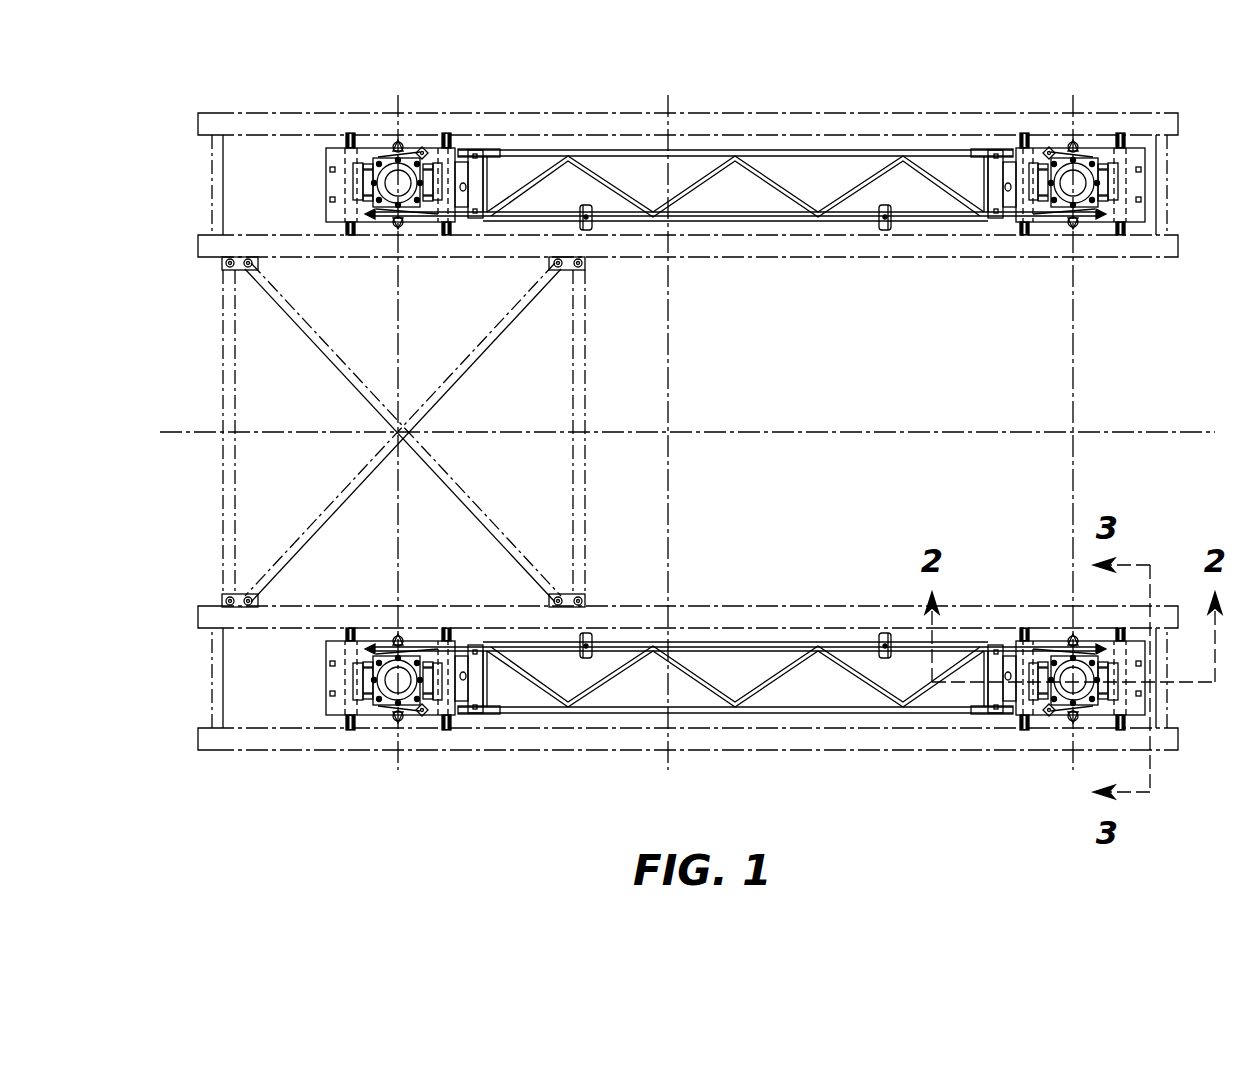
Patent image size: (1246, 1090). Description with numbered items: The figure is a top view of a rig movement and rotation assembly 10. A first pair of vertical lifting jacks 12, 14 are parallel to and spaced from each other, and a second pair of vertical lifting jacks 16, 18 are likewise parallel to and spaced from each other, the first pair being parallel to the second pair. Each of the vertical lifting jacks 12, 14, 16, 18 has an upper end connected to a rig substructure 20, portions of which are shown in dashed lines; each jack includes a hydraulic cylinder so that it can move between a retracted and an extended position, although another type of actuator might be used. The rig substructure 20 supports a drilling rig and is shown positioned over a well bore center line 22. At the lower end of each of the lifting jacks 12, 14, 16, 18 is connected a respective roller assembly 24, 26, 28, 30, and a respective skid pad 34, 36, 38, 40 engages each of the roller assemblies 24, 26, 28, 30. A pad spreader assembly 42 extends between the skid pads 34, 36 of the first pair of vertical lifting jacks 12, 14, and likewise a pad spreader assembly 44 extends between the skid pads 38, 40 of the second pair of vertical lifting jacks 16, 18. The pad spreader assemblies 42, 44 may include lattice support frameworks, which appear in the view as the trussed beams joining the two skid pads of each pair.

The rig movement and rotation assembly 10 is at (502, 843).
The vertical lifting jack 12 is at (400, 183).
The vertical lifting jack 14 is at (1068, 180).
The vertical lifting jack 16 is at (400, 683).
The vertical lifting jack 18 is at (1066, 690).
The rig substructure 20 is at (247, 123).
The well bore center line 22 is at (667, 432).
The roller assembly 24 is at (385, 132).
The roller assembly 26 is at (1086, 132).
The roller assembly 28 is at (384, 733).
The roller assembly 30 is at (1037, 733).
The skid pad 34 is at (370, 135).
The skid pad 36 is at (1108, 135).
The skid pad 38 is at (371, 730).
The skid pad 40 is at (1101, 730).
The pad spreader assembly 42 is at (622, 150).
The pad spreader assembly 44 is at (803, 710).